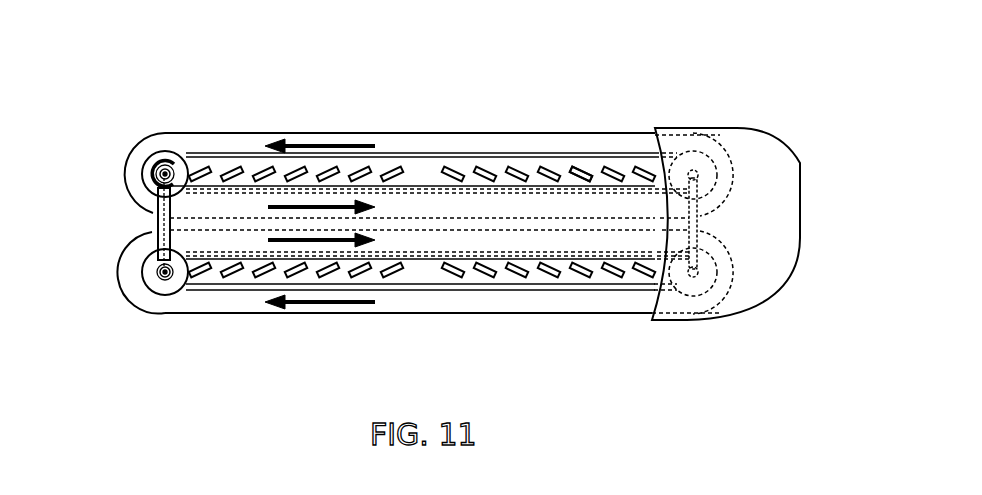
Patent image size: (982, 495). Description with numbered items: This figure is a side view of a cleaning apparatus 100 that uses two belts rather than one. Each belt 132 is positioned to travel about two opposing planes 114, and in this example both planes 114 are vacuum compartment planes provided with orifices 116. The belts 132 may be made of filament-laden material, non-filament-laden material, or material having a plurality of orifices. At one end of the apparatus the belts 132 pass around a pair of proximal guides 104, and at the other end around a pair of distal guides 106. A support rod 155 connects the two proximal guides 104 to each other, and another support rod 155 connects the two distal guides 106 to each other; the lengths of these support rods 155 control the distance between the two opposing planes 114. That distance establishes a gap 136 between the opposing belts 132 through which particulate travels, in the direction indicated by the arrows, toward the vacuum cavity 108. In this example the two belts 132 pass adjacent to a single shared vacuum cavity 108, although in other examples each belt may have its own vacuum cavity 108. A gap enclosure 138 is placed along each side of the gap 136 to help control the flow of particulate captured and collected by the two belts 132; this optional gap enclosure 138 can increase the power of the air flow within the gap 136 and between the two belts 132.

The cleaning apparatus 100 is at (429, 191).
The proximal guide 104 is at (688, 152).
The distal guide 106 is at (155, 153).
The vacuum cavity 108 is at (732, 140).
The plane 114 is at (423, 275).
The orifice 116 is at (513, 173).
The belt 132 is at (315, 133).
The gap 136 is at (150, 223).
The gap enclosure 138 is at (565, 163).
The support rod 155 is at (170, 237).